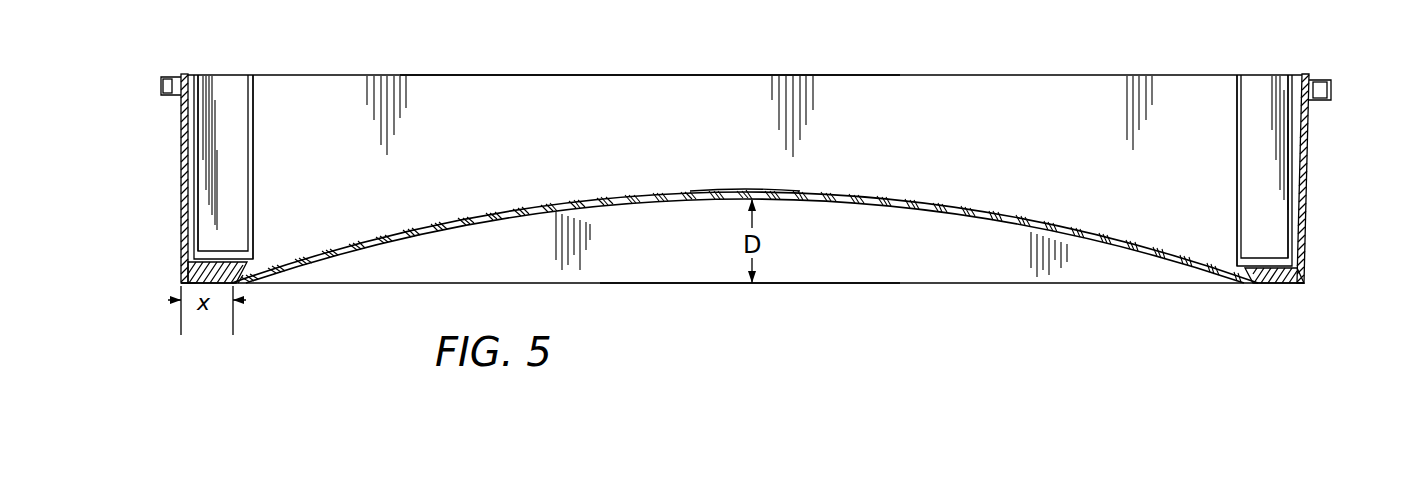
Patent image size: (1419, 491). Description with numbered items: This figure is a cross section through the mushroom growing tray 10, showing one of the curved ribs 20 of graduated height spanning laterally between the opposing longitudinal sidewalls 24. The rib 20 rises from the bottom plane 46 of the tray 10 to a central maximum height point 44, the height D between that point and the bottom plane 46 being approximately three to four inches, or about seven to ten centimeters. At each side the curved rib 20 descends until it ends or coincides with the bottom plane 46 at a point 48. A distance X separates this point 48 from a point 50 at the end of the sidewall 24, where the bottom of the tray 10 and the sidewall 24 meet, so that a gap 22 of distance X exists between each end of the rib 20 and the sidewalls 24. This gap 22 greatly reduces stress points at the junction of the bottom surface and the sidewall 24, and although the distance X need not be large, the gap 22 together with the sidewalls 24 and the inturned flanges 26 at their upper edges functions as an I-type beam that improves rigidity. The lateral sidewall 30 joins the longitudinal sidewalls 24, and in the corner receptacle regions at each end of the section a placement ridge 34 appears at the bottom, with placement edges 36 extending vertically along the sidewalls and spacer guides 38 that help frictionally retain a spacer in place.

The tray 10 is at (1037, 60).
The curved rib 20 is at (903, 207).
The gap 22 is at (1252, 284).
The longitudinal sidewall 24 is at (181, 163).
The inturned flange 26 is at (160, 88).
The lateral sidewall 30 is at (495, 97).
The placement ridge 34 is at (225, 258).
The placement edge 36 is at (254, 132).
The spacer guide 38 is at (222, 97).
The central maximum height point 44 is at (698, 190).
The bottom plane 46 is at (745, 284).
The point 48 is at (232, 284).
The point 50 is at (182, 281).